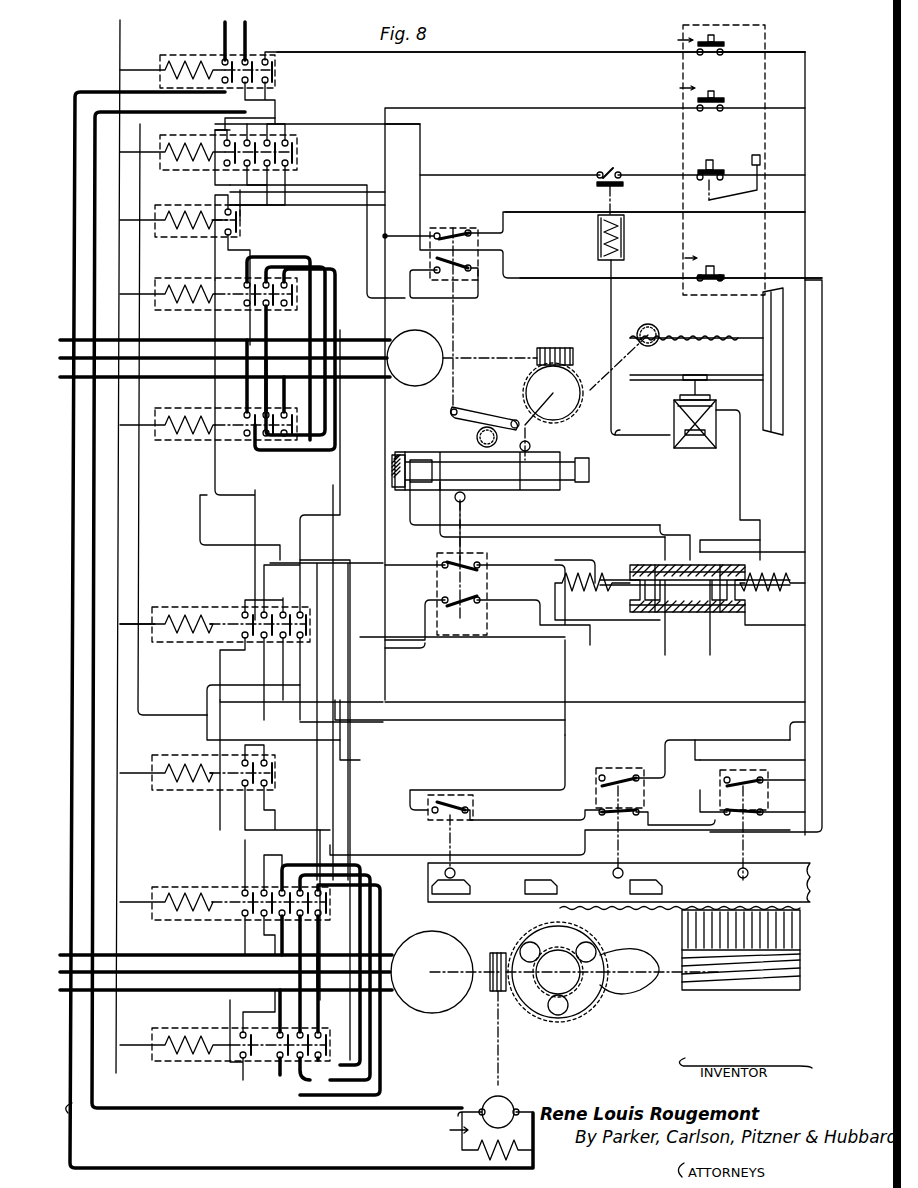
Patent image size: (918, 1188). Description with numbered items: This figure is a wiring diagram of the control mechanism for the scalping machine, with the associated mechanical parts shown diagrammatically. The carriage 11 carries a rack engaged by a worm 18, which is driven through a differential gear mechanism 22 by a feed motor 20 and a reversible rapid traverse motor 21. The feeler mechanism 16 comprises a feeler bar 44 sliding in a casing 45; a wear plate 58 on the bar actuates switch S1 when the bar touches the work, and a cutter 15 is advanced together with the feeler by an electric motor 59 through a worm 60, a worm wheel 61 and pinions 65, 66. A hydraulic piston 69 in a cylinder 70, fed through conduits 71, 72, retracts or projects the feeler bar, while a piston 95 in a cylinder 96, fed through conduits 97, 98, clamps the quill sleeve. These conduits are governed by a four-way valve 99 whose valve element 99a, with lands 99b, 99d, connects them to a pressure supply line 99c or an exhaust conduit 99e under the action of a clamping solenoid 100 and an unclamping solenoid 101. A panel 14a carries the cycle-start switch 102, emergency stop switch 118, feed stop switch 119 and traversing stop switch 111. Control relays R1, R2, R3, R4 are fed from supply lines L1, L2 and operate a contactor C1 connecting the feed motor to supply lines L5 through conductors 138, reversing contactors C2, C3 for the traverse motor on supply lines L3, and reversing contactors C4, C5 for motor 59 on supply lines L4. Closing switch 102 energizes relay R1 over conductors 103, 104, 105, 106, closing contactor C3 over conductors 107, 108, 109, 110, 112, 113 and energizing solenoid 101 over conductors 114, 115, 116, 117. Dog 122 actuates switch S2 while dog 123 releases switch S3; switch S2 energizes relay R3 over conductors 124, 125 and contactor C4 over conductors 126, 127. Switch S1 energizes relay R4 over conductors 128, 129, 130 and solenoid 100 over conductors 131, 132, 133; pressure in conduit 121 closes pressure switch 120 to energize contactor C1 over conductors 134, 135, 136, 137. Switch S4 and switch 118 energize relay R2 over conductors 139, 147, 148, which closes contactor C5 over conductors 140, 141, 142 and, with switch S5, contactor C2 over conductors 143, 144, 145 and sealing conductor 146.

The carriage 11 is at (782, 870).
The panel 14a is at (682, 138).
The cutting tool 15 is at (772, 322).
The feeler mechanism 16 is at (556, 450).
The worm 18 is at (802, 936).
The feed motor 20 is at (488, 1102).
The rapid traverse motor 21 is at (398, 1014).
The differential gear mechanism 22 is at (586, 1015).
The feeler bar 44 is at (574, 476).
The casing 45 is at (546, 490).
The wear plate 58 is at (532, 442).
The electric motor 59 is at (440, 325).
The worm 60 is at (560, 342).
The worm wheel 61 is at (530, 376).
The pinion 65 is at (646, 326).
The pinion 66 is at (474, 430).
The hydraulic piston 69 is at (424, 458).
The cylinder 70 is at (402, 454).
The conduit 71 is at (438, 498).
The conduit 72 is at (428, 524).
The hydraulic piston 95 is at (720, 428).
The cylinder 96 is at (686, 448).
The conduit 97 is at (740, 470).
The conduit 98 is at (662, 490).
The four-way valve 99 is at (695, 596).
The valve element 99a is at (688, 563).
The land 99b is at (726, 562).
The pressure supply line 99c is at (666, 642).
The land 99d is at (648, 606).
The exhaust conduit 99e is at (714, 644).
The clamping solenoid 100 is at (596, 592).
The unclamping solenoid 101 is at (762, 600).
The cycle-start switch 102 is at (725, 46).
The conductor 103 is at (146, 676).
The conductor 104 is at (288, 122).
The conductor 105 is at (568, 53).
The conductor 106 is at (786, 56).
The conductor 107 is at (215, 1002).
The conductor 108 is at (276, 812).
The conductor 109 is at (340, 850).
The conductor 110 is at (820, 280).
The traversing stop switch 111 is at (707, 281).
The conductor 112 is at (560, 270).
The conductor 113 is at (562, 204).
The conductor 114 is at (150, 738).
The conductor 115 is at (250, 728).
The conductor 116 is at (306, 750).
The conductor 117 is at (512, 646).
The emergency stop switch 118 is at (718, 96).
The feed stop switch 119 is at (697, 182).
The pressure switch 120 is at (606, 168).
The conduit 121 is at (616, 412).
The dog 122 is at (526, 896).
The dog 123 is at (456, 896).
The conductor 124 is at (224, 492).
The conductor 125 is at (736, 740).
The conductor 126 is at (238, 202).
The conductor 127 is at (324, 128).
The conductor 128 is at (342, 200).
The conductor 129 is at (322, 492).
The conductor 130 is at (422, 726).
The conductor 131 is at (243, 130).
The conductor 132 is at (338, 192).
The conductor 133 is at (650, 554).
The conductor 134 is at (213, 108).
The conductor 135 is at (470, 168).
The conductor 136 is at (634, 170).
The conductor 137 is at (792, 168).
The conductors 138 is at (74, 1132).
The conductor 139 is at (478, 702).
The conductor 140 is at (202, 501).
The conductor 141 is at (402, 658).
The conductor 142 is at (532, 598).
The conductor 143 is at (212, 838).
The conductor 144 is at (370, 578).
The conductor 145 is at (572, 692).
The conductor 146 is at (338, 810).
The conductor 147 is at (572, 108).
The conductor 148 is at (782, 108).
The supply line L1 is at (117, 52).
The supply line L2 is at (808, 52).
The supply lines L3 is at (165, 960).
The supply lines L4 is at (66, 358).
The supply lines L5 is at (246, 34).
The feed motor contactor C1 is at (162, 62).
The rapid return contactor C2 is at (174, 884).
The rapid approach contactor C3 is at (174, 1066).
The contactor C4 is at (190, 316).
The return contactor C5 is at (190, 446).
The relay R1 is at (166, 754).
The relay R2 is at (251, 682).
The relay R3 is at (182, 202).
The relay R4 is at (172, 172).
The switch S1 is at (444, 270).
The switch S2 is at (622, 832).
The switch S3 is at (454, 785).
The switch S4 is at (758, 832).
The switch S5 is at (464, 566).